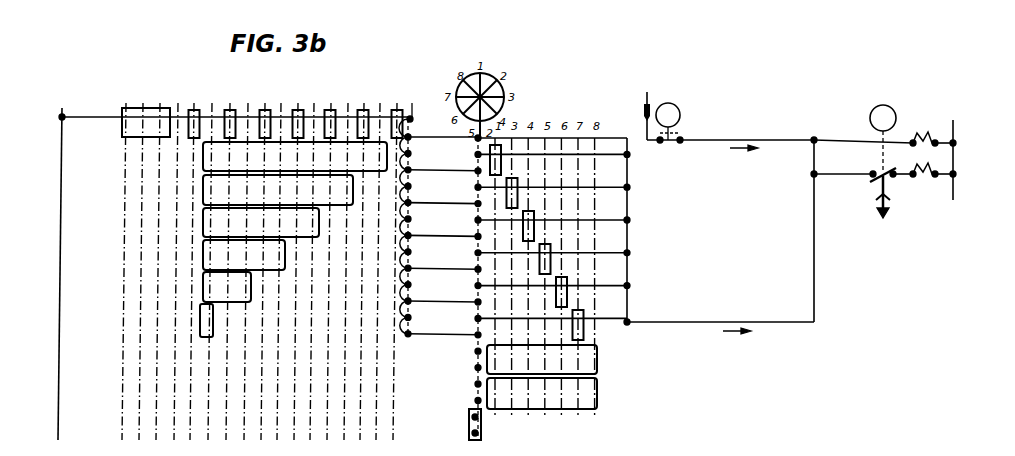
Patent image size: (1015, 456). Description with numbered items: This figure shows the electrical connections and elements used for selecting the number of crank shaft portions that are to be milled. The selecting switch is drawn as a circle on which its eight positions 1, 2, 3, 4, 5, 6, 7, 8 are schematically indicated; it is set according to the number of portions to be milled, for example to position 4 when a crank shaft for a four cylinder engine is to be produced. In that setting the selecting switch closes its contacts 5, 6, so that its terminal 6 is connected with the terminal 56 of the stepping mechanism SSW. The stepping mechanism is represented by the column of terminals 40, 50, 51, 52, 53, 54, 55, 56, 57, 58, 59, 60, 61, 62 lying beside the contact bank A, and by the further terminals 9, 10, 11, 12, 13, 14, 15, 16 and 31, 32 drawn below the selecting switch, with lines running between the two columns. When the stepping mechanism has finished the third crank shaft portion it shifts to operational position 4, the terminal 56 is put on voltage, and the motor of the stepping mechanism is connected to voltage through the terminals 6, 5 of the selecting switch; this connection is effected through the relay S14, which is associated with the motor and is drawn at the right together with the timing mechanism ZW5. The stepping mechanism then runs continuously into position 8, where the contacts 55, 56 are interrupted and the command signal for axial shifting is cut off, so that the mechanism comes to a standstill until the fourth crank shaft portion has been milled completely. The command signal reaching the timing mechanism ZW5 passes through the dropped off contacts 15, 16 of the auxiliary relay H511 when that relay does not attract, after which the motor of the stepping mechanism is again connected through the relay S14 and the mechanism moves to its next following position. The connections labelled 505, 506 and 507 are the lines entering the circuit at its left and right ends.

The supply line 506 is at (58, 111).
The supply line 507 is at (647, 94).
The supply line 505 is at (953, 131).
The contact bank A is at (262, 114).
The coil terminal 40 is at (417, 114).
The coil tap 50 is at (441, 132).
The coil tap 51 is at (416, 149).
The coil tap 52 is at (441, 165).
The coil tap 53 is at (416, 182).
The coil tap 54 is at (441, 198).
The stepping mechanism contact 55 is at (416, 215).
The stepping mechanism terminal 56 is at (441, 231).
The coil tap 57 is at (416, 247).
The coil tap 58 is at (441, 264).
The coil tap 59 is at (416, 280).
The coil tap 60 is at (441, 297).
The coil tap 61 is at (416, 313).
The coil tap 62 is at (441, 329).
The selecting switch position 1 is at (548, 154).
The selecting switch position 2 is at (482, 171).
The selecting switch position 3 is at (548, 187).
The selecting switch position 4 is at (482, 204).
The selecting switch contact 5 is at (548, 220).
The selecting switch terminal 6 is at (482, 236).
The selecting switch position 7 is at (548, 252).
The selecting switch position 8 is at (482, 269).
The switch contact 9 is at (548, 285).
The switch contact 10 is at (486, 302).
The switch contact 11 is at (545, 318).
The switch contact 12 is at (486, 334).
The switch contact 13 is at (471, 351).
The switch contact 14 is at (471, 367).
The auxiliary relay contact 15 is at (471, 384).
The auxiliary relay contact 16 is at (471, 400).
The terminal 31 is at (465, 417).
The terminal 32 is at (465, 433).
The auxiliary relay H511 is at (676, 104).
The timing mechanism ZW5 is at (889, 95).
The relay S14 is at (938, 169).